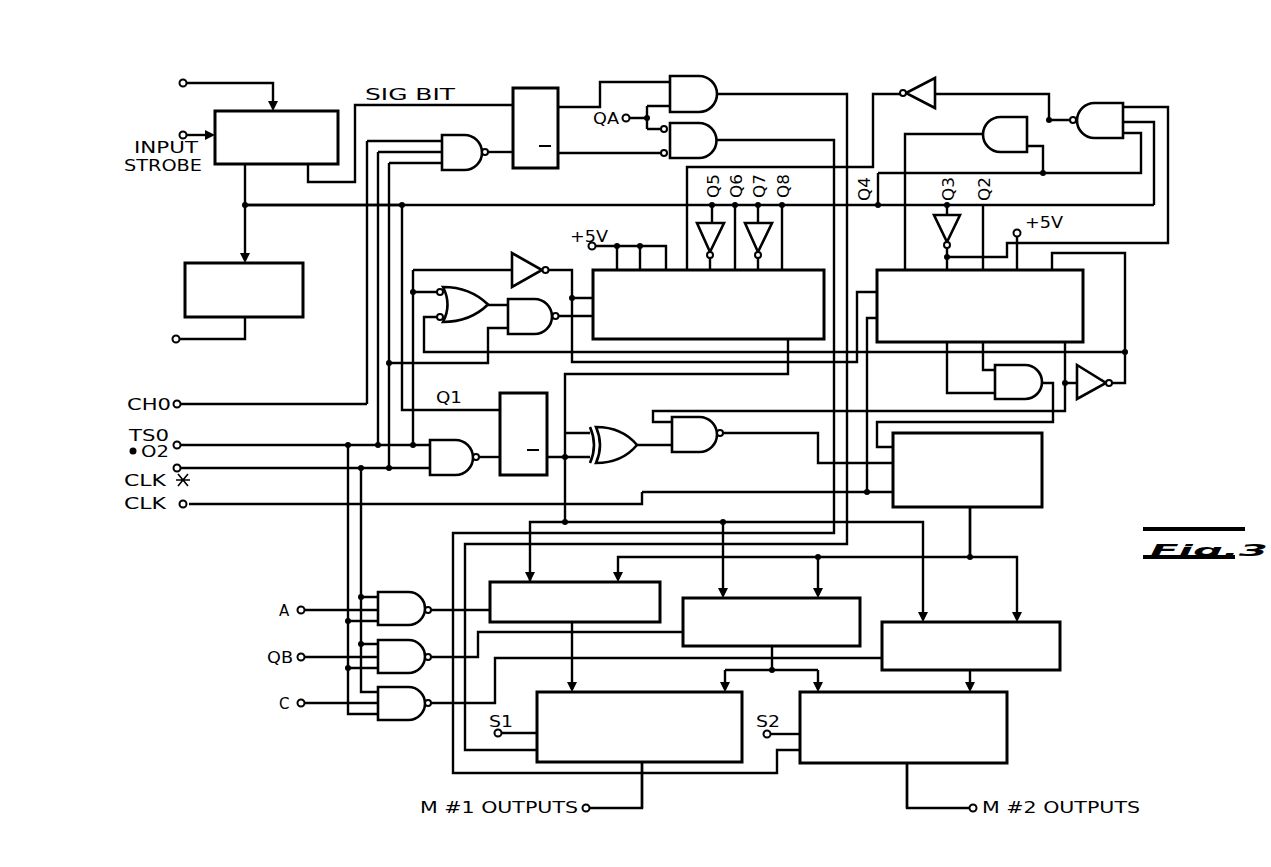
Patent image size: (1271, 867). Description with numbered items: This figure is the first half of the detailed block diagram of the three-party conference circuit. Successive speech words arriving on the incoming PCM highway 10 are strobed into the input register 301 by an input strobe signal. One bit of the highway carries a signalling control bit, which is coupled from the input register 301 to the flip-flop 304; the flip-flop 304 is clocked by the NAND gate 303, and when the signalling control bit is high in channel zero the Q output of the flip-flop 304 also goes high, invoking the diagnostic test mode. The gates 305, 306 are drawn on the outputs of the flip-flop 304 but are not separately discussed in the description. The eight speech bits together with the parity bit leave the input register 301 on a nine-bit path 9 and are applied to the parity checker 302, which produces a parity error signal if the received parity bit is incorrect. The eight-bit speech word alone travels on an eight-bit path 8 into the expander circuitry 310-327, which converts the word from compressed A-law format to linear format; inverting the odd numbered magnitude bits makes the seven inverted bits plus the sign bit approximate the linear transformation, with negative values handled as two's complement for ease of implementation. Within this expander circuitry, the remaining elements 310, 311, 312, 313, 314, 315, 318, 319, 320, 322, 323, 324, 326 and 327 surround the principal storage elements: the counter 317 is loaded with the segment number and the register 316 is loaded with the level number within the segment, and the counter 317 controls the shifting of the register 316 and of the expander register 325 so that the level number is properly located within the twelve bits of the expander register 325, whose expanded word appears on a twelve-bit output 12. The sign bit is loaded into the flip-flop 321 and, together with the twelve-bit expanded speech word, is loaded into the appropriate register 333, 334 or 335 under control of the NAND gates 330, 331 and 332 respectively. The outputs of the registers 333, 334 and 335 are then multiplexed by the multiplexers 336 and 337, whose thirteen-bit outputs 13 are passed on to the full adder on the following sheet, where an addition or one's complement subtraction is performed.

The PCM input 10 is at (235, 70).
The 8-bit data bus 8 is at (322, 192).
The 9-bit data bus 9 is at (257, 173).
The expander register output bus 12 is at (983, 522).
The multiplexer output bus 13 is at (653, 778).
The input register 301 is at (287, 111).
The parity checker 302 is at (278, 263).
The NAND gate 303 is at (447, 135).
The flip-flop 304 is at (522, 88).
The AND gate 305 is at (705, 76).
The AND gate 306 is at (714, 123).
The expander circuitry 310 is at (455, 287).
The expander circuitry 311 is at (528, 258).
The expander circuitry 312 is at (500, 320).
The expander circuitry 313 is at (700, 240).
The expander circuitry 314 is at (770, 240).
The expander circuitry 315 is at (936, 235).
The register 316 is at (787, 270).
The counter 317 is at (903, 270).
The expander circuitry 318 is at (1098, 392).
The expander circuitry 319 is at (925, 83).
The expander circuitry 320 is at (434, 440).
The flip-flop 321 is at (515, 393).
The expander circuitry 322 is at (607, 430).
The expander circuitry 323 is at (704, 450).
The expander circuitry 324 is at (997, 395).
The expander register 325 is at (1044, 480).
The expander circuitry 326 is at (988, 128).
The expander circuitry 327 is at (1102, 112).
The NAND gate 330 is at (401, 592).
The NAND gate 331 is at (383, 647).
The NAND gate 332 is at (403, 720).
The register 333 is at (656, 582).
The register 334 is at (845, 598).
The register 335 is at (1040, 622).
The multiplexer 336 is at (625, 692).
The multiplexer 337 is at (1007, 720).